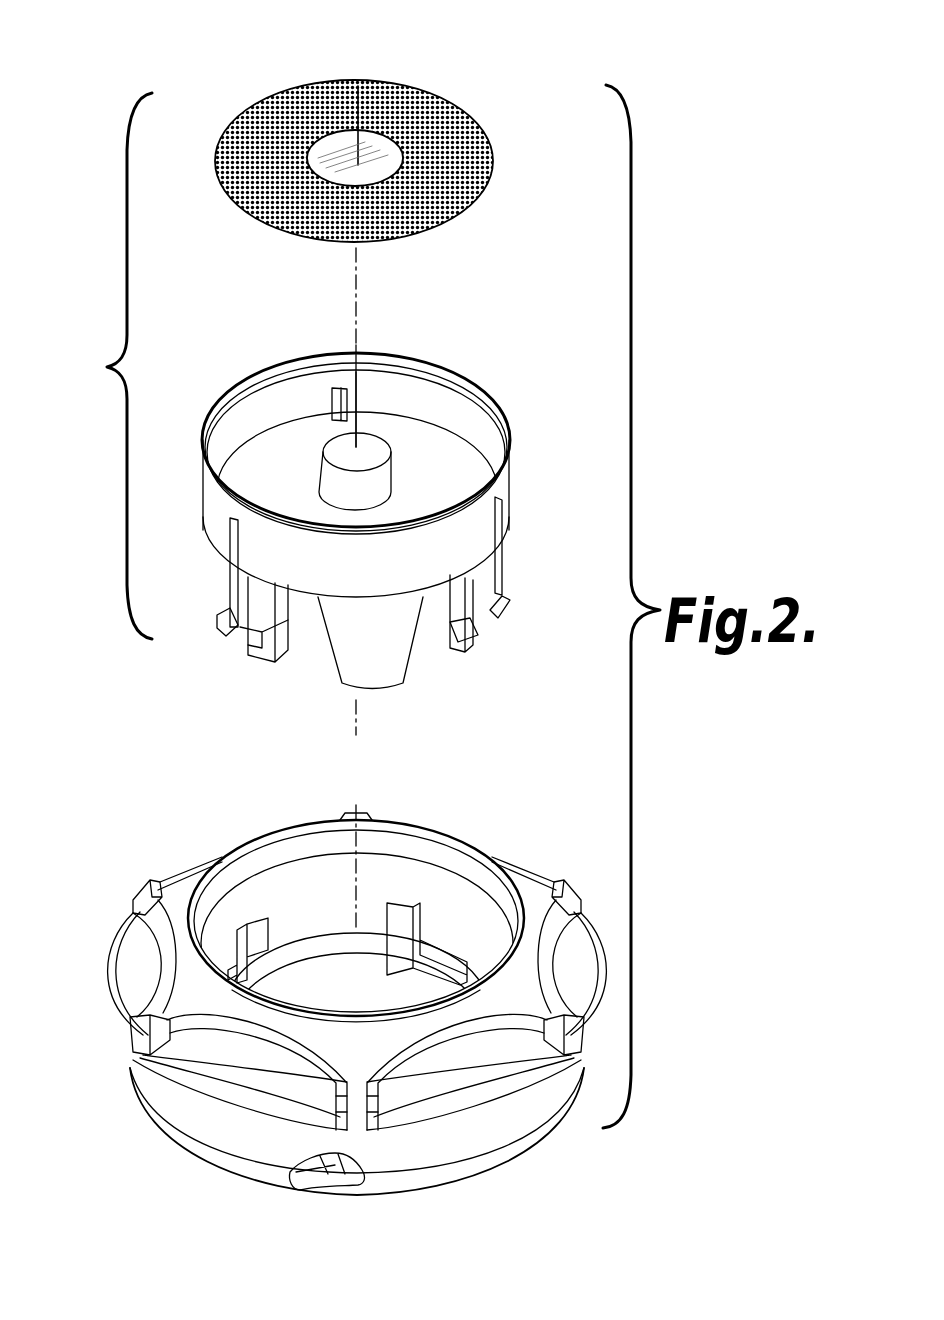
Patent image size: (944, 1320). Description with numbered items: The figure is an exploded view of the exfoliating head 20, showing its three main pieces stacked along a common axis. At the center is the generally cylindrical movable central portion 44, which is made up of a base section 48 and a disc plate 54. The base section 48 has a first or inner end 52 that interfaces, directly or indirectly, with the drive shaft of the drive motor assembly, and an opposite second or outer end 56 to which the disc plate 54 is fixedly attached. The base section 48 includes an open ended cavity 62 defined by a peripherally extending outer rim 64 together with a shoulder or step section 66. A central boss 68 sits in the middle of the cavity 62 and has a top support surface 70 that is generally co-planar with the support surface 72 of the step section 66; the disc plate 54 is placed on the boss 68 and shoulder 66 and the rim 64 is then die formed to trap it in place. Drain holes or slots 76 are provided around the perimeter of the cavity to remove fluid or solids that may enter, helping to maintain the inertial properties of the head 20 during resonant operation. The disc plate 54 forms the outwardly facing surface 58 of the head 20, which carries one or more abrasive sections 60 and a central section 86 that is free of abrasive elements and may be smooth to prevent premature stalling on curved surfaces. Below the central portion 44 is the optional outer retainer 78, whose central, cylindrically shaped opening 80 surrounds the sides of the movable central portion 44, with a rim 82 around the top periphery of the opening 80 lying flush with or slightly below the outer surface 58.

The exfoliating head 20 is at (382, 132).
The movable central portion 44 is at (107, 367).
The base section 48 is at (364, 505).
The first or inner end 52 is at (405, 665).
The disc plate 54 is at (490, 141).
The second or outer end 56 is at (215, 496).
The outwardly facing surface 58 is at (275, 106).
The abrasive sections 60 is at (346, 81).
The open ended cavity 62 is at (436, 416).
The outer rim 64 is at (505, 413).
The shoulder or step section 66 is at (502, 448).
The central boss 68 is at (382, 470).
The top support surface 70 is at (335, 445).
The support surface 72 is at (215, 425).
The drain holes or slots 76 is at (340, 395).
The outer retainer 78 is at (323, 988).
The central opening 80 is at (297, 885).
The rim 82 is at (205, 881).
The section absent of abrasive elements 86 is at (384, 90).